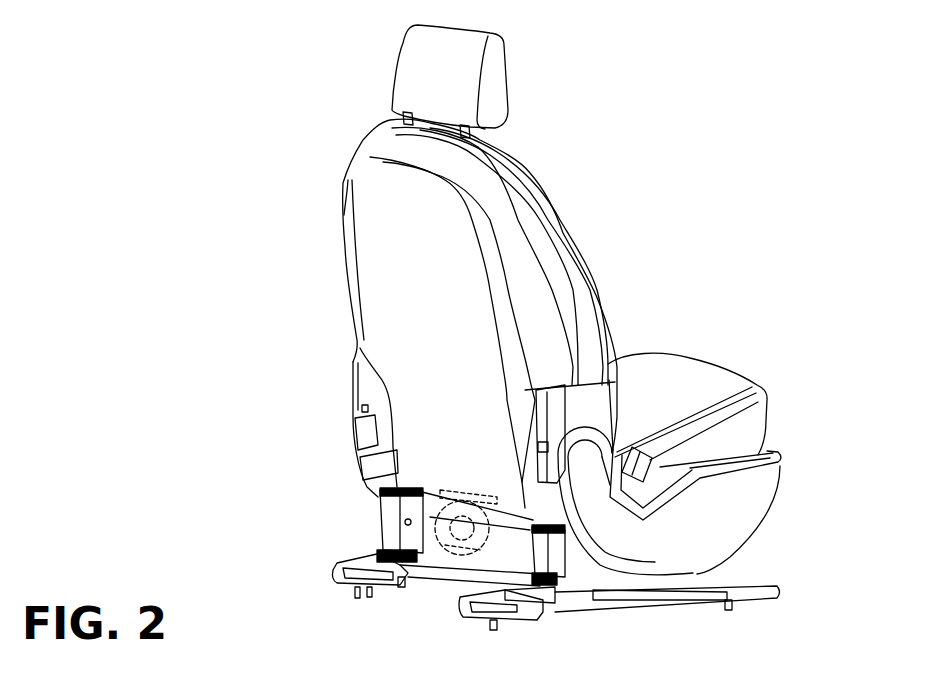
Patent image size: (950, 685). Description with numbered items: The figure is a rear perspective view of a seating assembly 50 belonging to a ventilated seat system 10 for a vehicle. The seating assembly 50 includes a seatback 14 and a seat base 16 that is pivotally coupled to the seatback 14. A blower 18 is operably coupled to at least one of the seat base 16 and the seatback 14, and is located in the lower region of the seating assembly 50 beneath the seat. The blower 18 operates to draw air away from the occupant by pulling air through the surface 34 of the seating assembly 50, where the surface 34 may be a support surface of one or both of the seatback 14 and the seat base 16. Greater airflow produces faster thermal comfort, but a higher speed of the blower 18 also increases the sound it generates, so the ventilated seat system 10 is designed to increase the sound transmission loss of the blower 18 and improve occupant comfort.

The ventilated seat system 10 is at (338, 137).
The seatback 14 is at (510, 185).
The seat base 16 is at (752, 427).
The blower 18 is at (456, 560).
The surface 34 is at (657, 388).
The seating assembly 50 is at (588, 286).